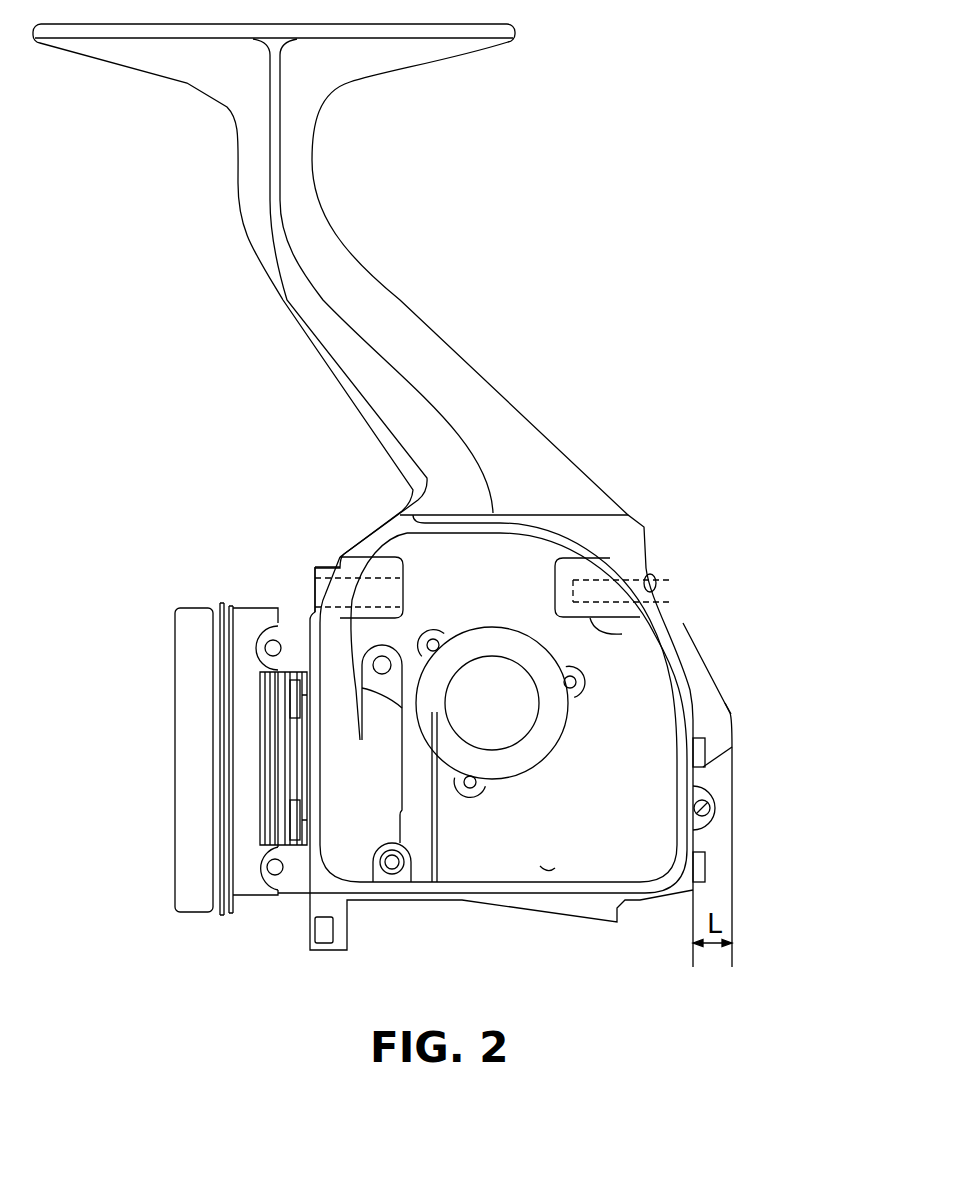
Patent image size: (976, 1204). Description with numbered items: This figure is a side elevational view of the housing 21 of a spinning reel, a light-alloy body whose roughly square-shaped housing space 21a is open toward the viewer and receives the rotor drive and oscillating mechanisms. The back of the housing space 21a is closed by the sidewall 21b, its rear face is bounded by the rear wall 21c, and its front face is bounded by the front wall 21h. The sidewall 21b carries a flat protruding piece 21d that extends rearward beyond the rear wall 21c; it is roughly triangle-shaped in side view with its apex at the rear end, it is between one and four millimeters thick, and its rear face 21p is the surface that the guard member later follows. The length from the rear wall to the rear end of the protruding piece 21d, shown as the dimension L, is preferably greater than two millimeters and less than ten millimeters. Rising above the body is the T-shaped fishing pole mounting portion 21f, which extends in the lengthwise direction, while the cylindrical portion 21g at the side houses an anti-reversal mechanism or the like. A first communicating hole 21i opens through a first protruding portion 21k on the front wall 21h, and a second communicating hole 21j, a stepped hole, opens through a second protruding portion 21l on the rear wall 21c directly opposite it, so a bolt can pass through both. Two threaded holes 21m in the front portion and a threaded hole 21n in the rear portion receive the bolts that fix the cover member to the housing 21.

The housing 21 is at (645, 480).
The housing space 21a is at (543, 868).
The sidewall 21b is at (463, 860).
The rear wall 21c is at (700, 778).
The protruding piece 21d is at (723, 685).
The fishing pole mounting portion 21f is at (367, 268).
The cylindrical portion 21g is at (185, 912).
The front wall 21h is at (320, 625).
The first communicating hole 21i is at (312, 590).
The second communicating hole 21j is at (672, 592).
The first protruding portion 21k is at (377, 763).
The second protruding portion 21l is at (592, 620).
The threaded holes 21m is at (262, 667).
The threaded hole 21n is at (712, 803).
The rear face of the protruding piece 21p is at (731, 714).